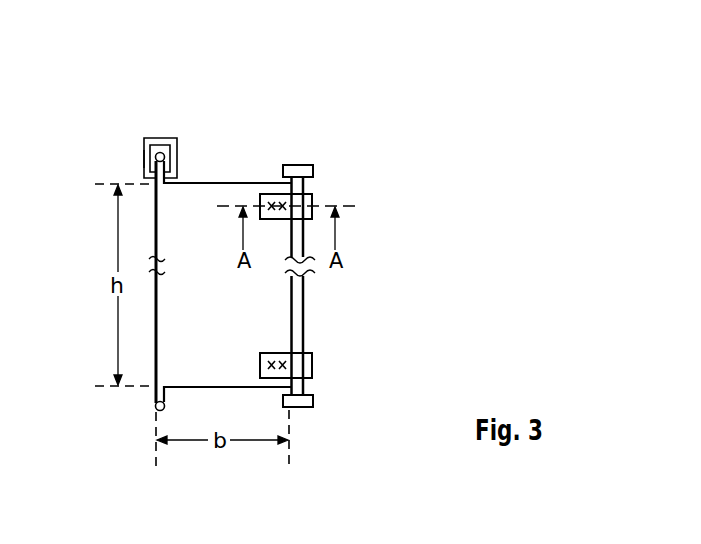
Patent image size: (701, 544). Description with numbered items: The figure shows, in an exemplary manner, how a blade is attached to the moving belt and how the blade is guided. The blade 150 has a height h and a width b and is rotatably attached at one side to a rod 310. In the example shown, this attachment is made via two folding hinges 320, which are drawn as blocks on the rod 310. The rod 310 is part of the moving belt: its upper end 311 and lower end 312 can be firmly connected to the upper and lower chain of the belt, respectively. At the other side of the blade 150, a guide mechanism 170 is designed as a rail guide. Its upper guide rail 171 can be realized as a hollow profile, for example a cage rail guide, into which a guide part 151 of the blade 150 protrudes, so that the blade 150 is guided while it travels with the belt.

The blade 150 is at (203, 188).
The guide part 151 is at (165, 151).
The guide mechanism 170 is at (157, 123).
The upper guide rail 171 is at (146, 156).
The rod 310 is at (298, 313).
The upper end of the rod 311 is at (293, 168).
The lower end of the rod 312 is at (303, 408).
The folding hinge 320 is at (310, 198).